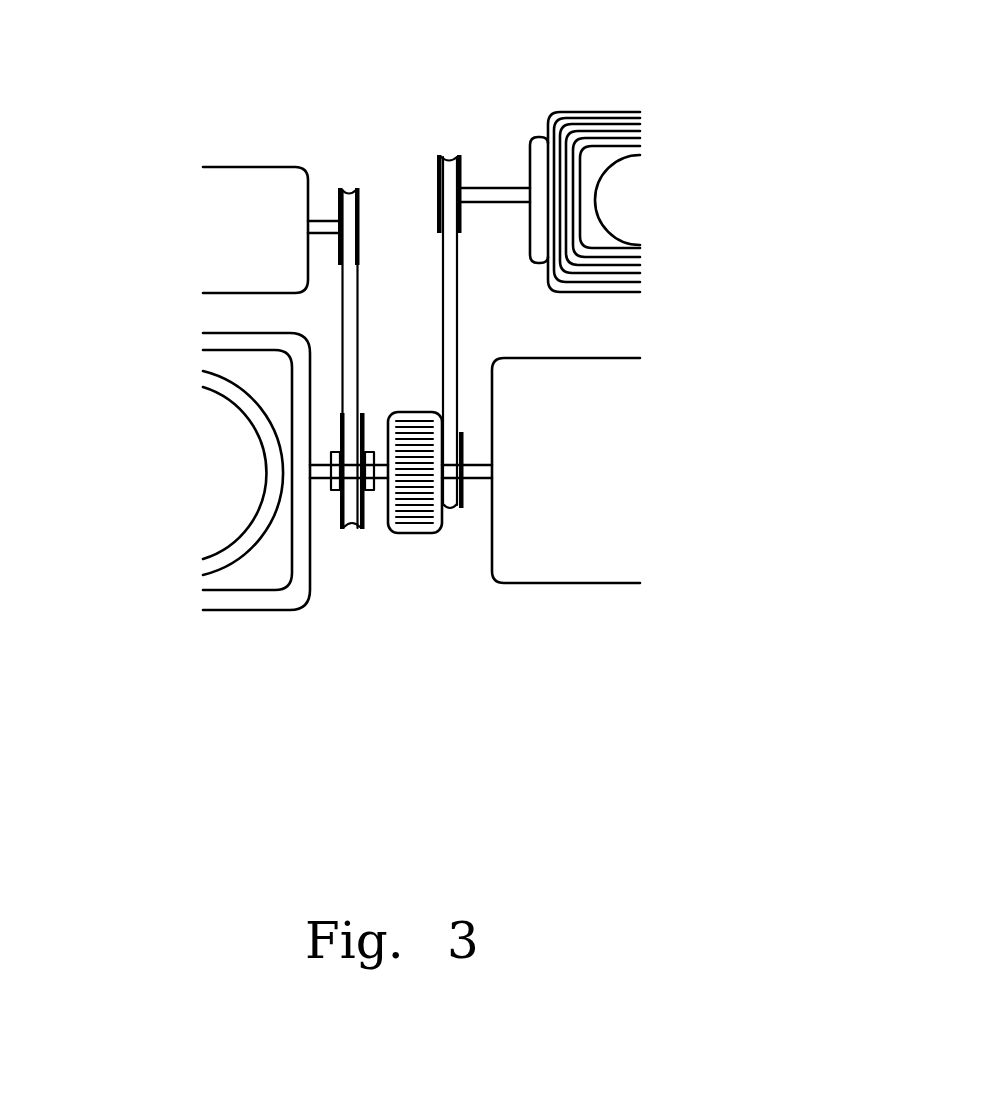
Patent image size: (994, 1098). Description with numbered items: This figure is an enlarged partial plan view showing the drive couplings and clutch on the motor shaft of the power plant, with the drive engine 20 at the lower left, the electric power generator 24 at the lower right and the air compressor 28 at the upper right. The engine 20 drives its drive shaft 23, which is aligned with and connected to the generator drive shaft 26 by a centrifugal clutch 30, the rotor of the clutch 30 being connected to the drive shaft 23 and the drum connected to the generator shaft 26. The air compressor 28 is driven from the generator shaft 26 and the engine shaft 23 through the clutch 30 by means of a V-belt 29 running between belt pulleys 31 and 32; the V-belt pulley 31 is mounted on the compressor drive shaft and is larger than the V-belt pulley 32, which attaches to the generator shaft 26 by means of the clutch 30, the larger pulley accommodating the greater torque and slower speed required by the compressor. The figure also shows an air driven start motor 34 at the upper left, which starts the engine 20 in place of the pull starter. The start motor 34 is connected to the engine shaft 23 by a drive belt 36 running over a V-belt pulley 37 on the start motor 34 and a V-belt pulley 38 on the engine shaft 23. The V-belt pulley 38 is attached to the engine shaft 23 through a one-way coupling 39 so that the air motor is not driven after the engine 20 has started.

The gasoline internal combustion engine 20 is at (238, 608).
The drive shaft 23 is at (328, 450).
The electric power generator 24 is at (593, 583).
The generator drive shaft 26 is at (478, 467).
The air compressor 28 is at (603, 108).
The V-belt 29 is at (450, 357).
The centrifugal clutch 30 is at (428, 523).
The V-belt pulley 31 is at (460, 157).
The V-belt pulley 32 is at (463, 440).
The air driven start motor 34 is at (220, 167).
The drive belt 36 is at (357, 290).
The V-belt pulley 37 is at (345, 190).
The V-belt pulley 38 is at (360, 533).
The one-way coupling 39 is at (330, 500).